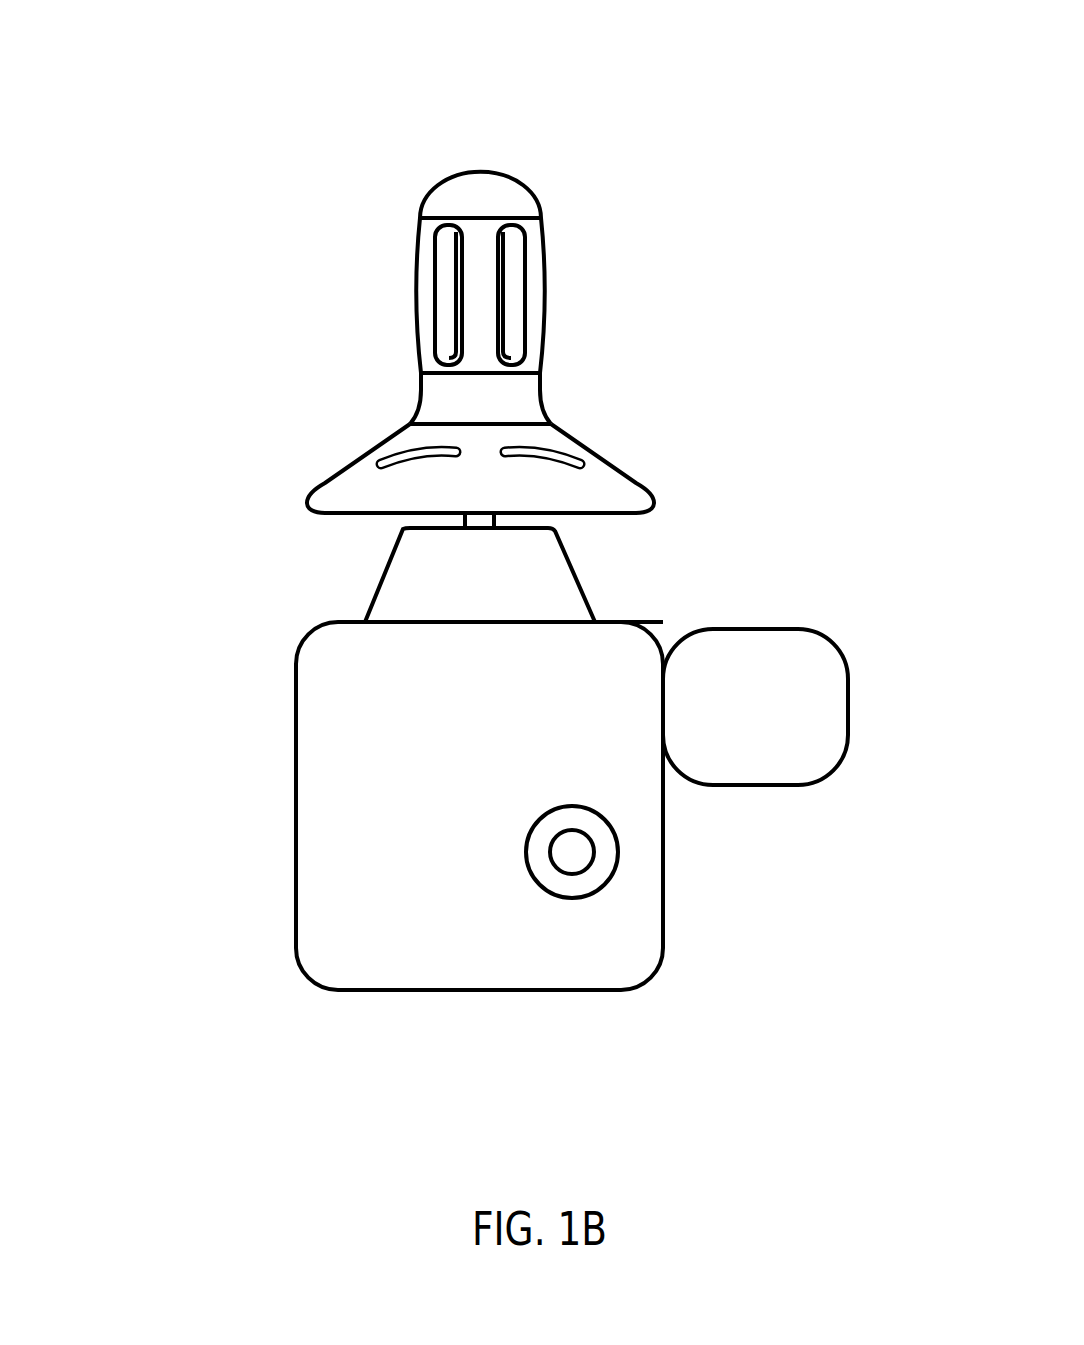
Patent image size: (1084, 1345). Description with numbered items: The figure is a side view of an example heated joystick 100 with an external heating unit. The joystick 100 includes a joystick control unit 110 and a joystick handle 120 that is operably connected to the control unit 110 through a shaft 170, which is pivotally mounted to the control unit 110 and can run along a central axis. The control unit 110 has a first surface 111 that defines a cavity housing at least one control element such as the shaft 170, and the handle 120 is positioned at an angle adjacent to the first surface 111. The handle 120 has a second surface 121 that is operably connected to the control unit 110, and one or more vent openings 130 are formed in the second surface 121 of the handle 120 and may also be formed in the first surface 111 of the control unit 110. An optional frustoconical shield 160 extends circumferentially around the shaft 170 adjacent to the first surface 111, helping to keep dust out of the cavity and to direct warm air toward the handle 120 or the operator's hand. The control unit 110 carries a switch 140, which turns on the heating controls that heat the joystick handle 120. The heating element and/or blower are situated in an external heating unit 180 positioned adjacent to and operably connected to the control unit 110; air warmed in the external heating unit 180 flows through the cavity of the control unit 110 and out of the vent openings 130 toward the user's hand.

The joystick 100 is at (88, 76).
The joystick control unit 110 is at (358, 731).
The first surface 111 is at (606, 624).
The joystick handle 120 is at (537, 277).
The second surface 121 is at (573, 430).
The vent openings 130 is at (440, 297).
The switch 140 is at (575, 857).
The shield 160 is at (548, 582).
The shaft 170 is at (465, 521).
The external heating unit 180 is at (768, 655).